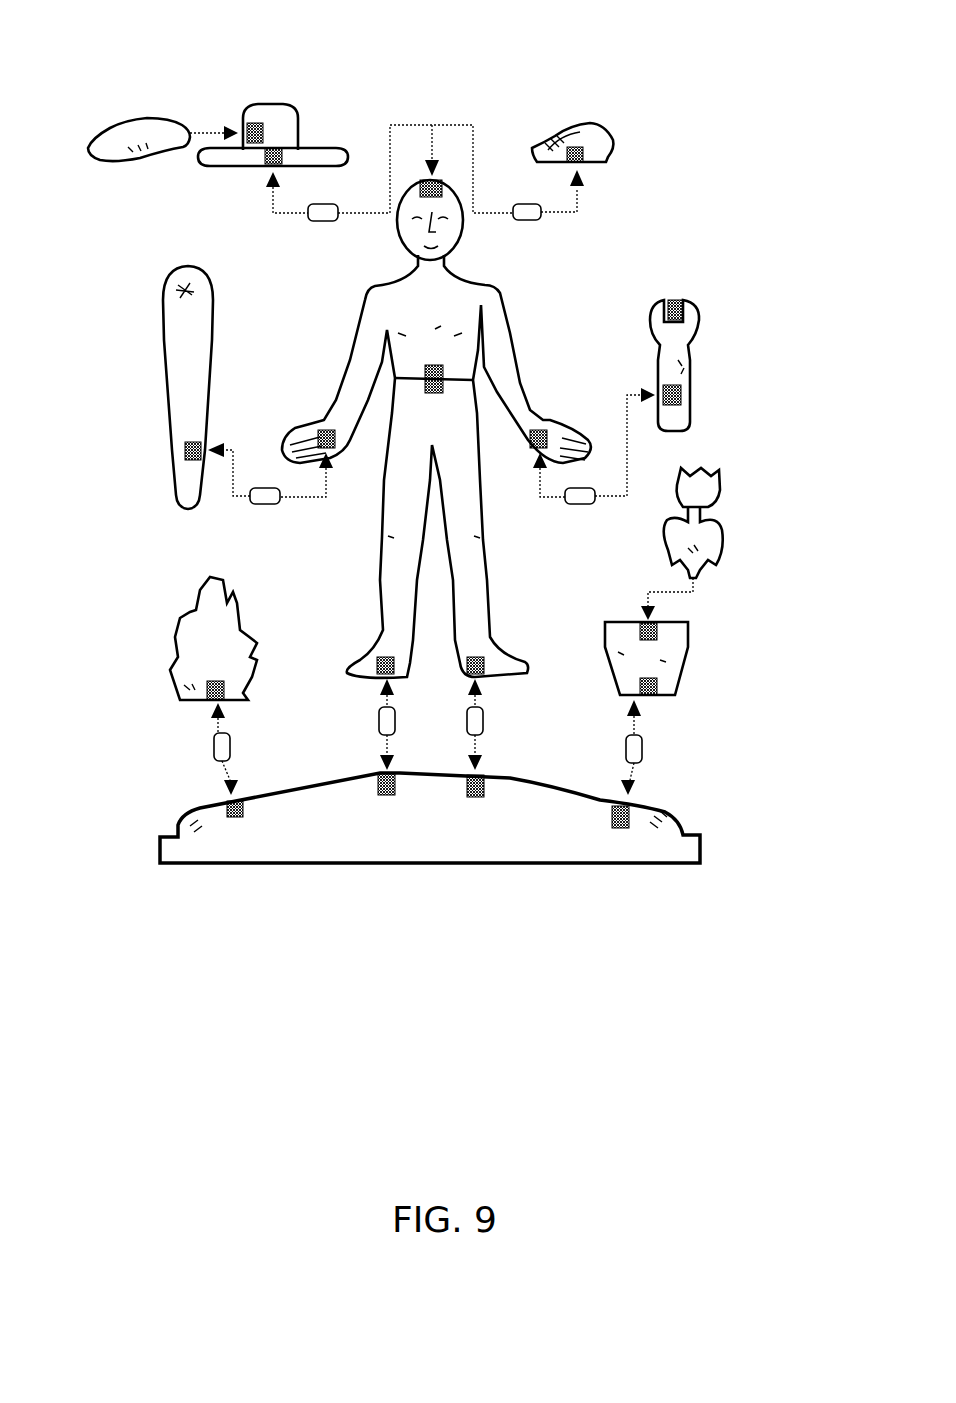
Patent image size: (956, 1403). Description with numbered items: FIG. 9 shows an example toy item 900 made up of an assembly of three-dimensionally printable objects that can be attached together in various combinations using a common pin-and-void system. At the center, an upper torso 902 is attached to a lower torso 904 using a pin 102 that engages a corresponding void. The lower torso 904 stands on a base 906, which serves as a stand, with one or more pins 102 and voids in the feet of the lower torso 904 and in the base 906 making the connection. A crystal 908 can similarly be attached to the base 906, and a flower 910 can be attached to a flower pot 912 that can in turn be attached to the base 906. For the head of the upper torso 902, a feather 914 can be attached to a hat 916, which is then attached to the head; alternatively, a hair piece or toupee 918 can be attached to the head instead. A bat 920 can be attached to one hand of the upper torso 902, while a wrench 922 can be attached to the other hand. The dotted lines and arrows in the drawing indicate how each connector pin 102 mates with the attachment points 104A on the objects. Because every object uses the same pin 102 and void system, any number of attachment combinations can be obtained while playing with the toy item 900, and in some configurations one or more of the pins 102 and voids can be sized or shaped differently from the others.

The toy item 900 is at (592, 31).
The upper torso 902 is at (385, 297).
The lower torso 904 is at (400, 567).
The base 906 is at (697, 850).
The crystal 908 is at (228, 620).
The flower 910 is at (708, 545).
The flower pot 912 is at (668, 668).
The feather 914 is at (122, 152).
The hat 916 is at (290, 135).
The hair piece or toupee 918 is at (598, 142).
The bat 920 is at (197, 356).
The wrench 922 is at (677, 413).
The pin 102 is at (318, 222).
The sensor node / interface 104A is at (236, 112).